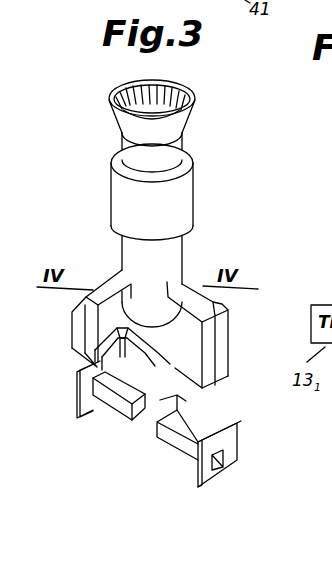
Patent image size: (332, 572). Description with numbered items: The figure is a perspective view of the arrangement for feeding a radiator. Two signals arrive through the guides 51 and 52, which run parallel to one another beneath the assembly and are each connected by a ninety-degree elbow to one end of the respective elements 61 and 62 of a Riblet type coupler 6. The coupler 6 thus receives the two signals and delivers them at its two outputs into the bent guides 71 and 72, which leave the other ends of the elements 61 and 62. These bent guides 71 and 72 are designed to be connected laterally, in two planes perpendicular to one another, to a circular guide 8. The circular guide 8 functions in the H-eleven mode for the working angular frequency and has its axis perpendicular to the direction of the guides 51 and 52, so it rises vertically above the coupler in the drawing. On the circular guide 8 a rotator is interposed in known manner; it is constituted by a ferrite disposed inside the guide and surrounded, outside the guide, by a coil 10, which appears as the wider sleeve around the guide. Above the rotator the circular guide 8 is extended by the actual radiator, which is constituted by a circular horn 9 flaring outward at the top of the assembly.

The circular horn 9 is at (175, 132).
The coil 10 is at (117, 180).
The circular guide 8 is at (167, 257).
The bent guide 71 is at (77, 320).
The bent guide 72 is at (215, 348).
The Riblet type coupler 6 is at (132, 349).
The element of Riblet type coupler 61 is at (147, 382).
The element of Riblet type coupler 62 is at (160, 400).
The guide 51 is at (66, 403).
The guide 52 is at (183, 453).